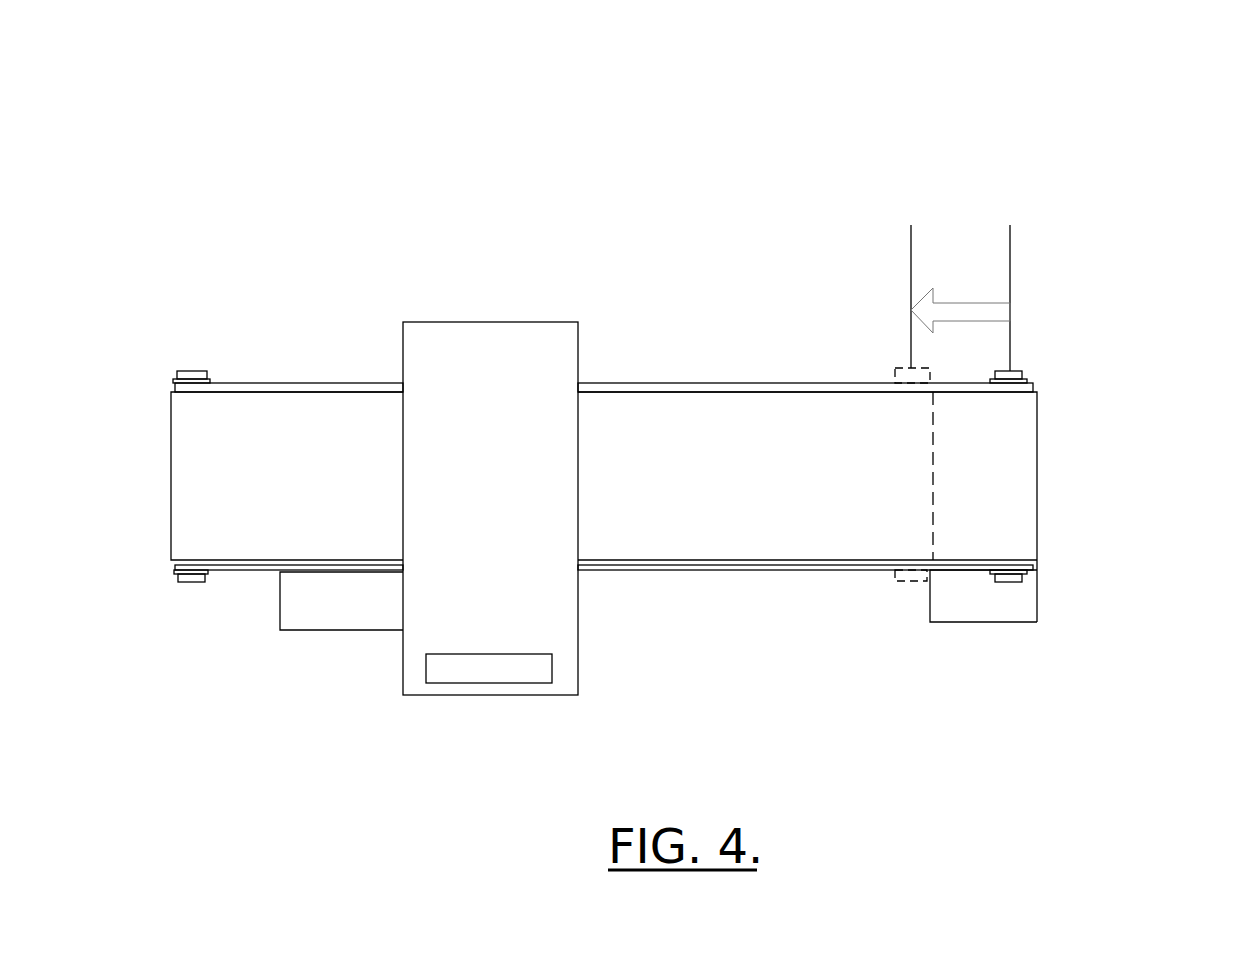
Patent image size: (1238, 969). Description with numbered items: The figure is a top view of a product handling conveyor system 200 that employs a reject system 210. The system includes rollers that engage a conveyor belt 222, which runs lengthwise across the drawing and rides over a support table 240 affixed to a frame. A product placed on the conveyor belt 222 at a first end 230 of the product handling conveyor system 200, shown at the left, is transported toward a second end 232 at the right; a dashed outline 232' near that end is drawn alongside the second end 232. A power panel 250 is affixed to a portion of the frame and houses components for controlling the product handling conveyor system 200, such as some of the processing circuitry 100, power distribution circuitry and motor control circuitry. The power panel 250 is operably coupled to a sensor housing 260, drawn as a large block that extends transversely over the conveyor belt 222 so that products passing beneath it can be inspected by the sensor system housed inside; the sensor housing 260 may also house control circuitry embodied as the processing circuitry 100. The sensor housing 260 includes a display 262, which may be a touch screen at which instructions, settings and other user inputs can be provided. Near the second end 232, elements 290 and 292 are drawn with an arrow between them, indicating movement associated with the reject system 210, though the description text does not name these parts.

The processing circuitry 100 is at (1015, 607).
The product handling conveyor system 200 is at (652, 369).
The reject system 210 is at (1057, 394).
The conveyor belt 222 is at (760, 369).
The first end 230 is at (171, 446).
The second end 232 is at (650, 507).
The carriage body (alternate position) 232' is at (982, 476).
The support table 240 is at (604, 455).
The power panel 250 is at (328, 622).
The sensor housing 260 is at (495, 486).
The display 262 is at (549, 685).
The drive rod 290 is at (1046, 399).
The drive rod (retracted position) 292 is at (948, 399).